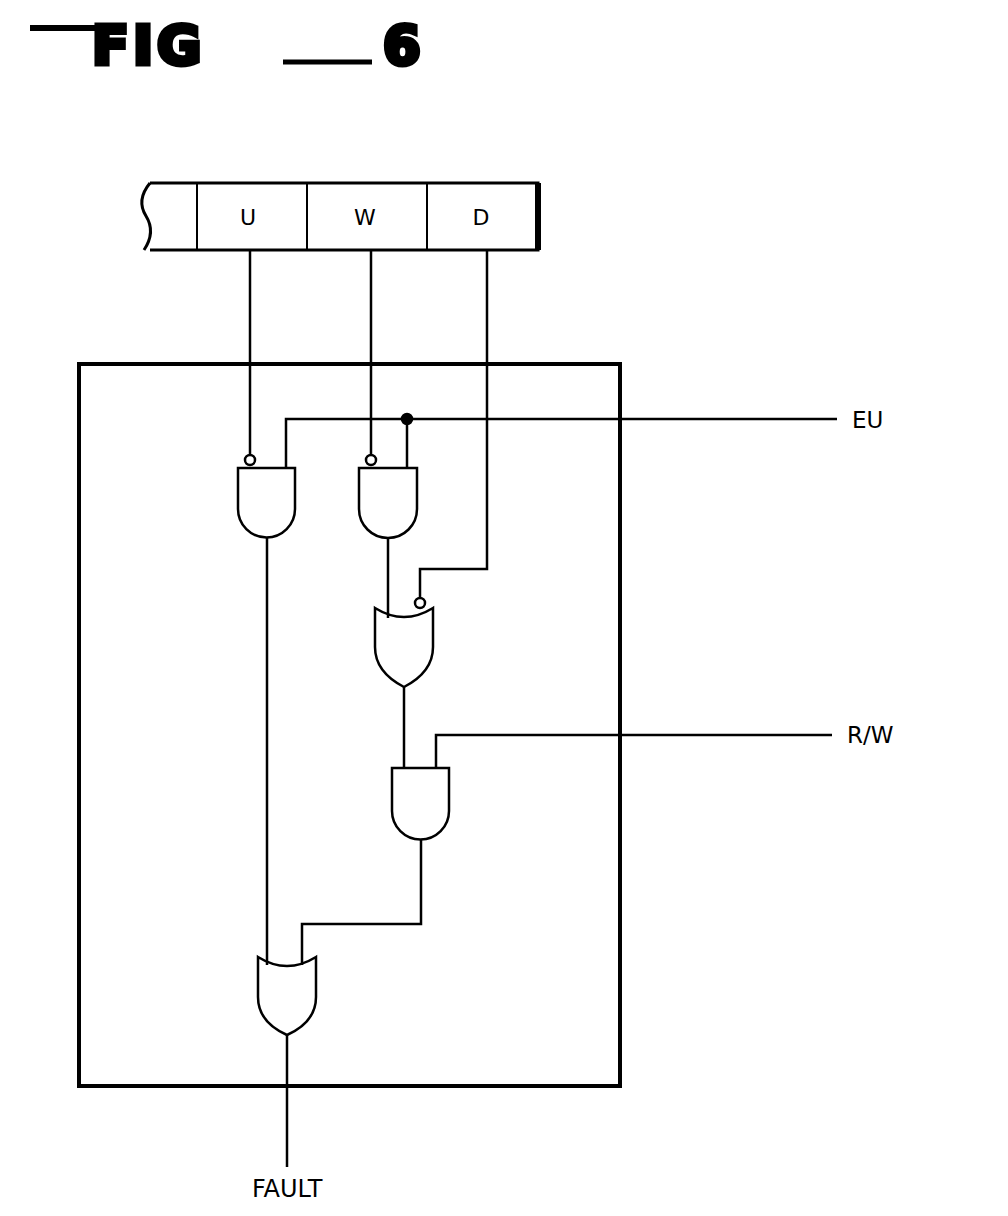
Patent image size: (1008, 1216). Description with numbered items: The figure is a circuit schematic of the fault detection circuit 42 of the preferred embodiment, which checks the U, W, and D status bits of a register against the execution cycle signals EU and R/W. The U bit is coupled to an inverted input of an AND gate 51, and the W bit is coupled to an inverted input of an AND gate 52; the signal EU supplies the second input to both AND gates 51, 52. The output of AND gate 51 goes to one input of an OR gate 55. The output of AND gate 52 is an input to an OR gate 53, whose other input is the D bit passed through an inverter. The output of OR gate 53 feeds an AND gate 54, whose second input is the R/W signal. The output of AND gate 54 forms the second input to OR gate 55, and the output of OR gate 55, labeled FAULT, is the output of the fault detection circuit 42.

The fault detection circuit 42 is at (594, 365).
The AND gate 51 is at (269, 506).
The AND gate 52 is at (373, 506).
The OR gate 53 is at (390, 654).
The AND gate 54 is at (406, 806).
The OR gate 55 is at (273, 1002).